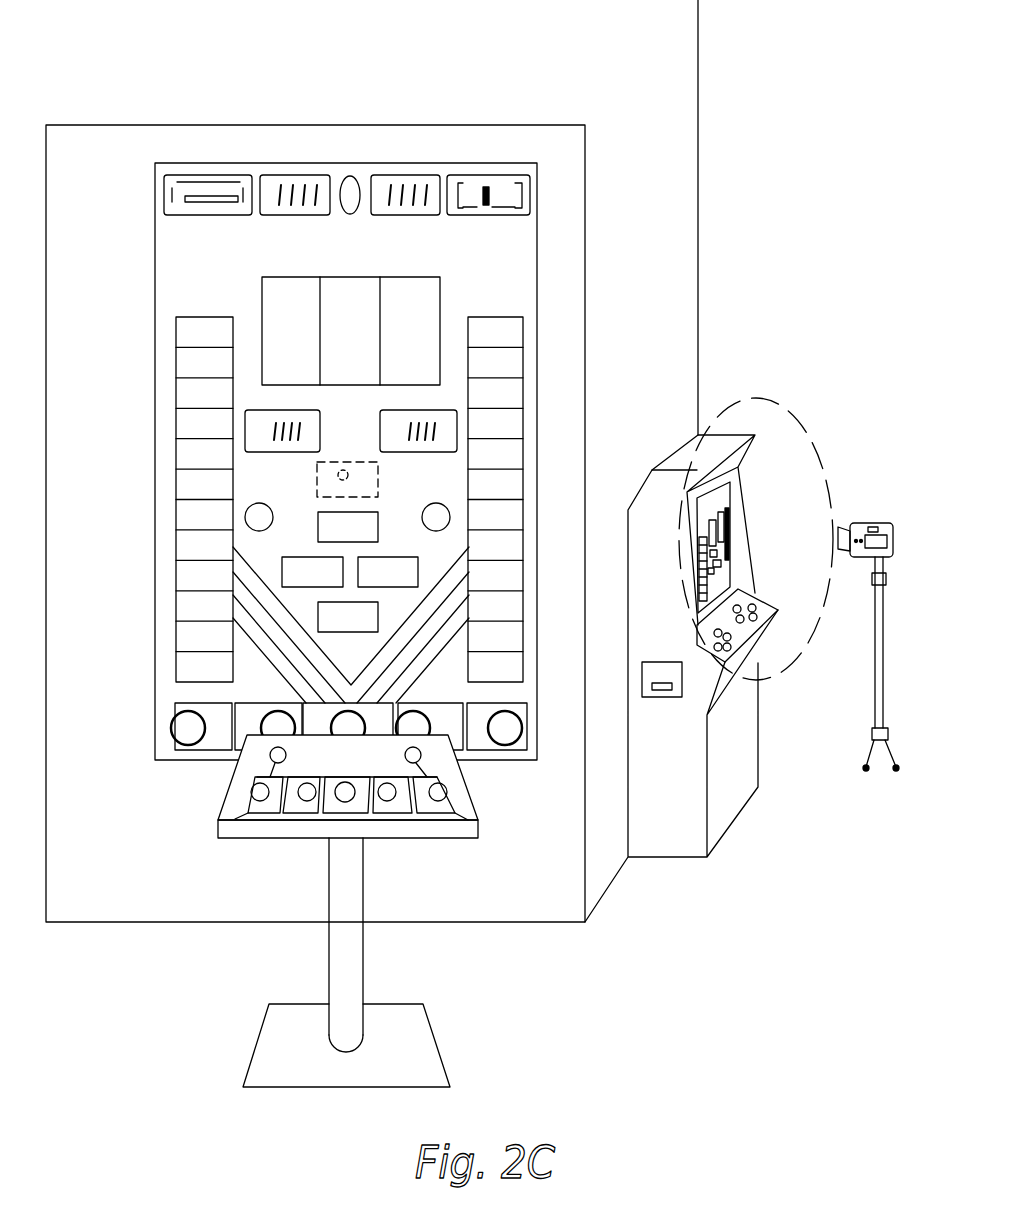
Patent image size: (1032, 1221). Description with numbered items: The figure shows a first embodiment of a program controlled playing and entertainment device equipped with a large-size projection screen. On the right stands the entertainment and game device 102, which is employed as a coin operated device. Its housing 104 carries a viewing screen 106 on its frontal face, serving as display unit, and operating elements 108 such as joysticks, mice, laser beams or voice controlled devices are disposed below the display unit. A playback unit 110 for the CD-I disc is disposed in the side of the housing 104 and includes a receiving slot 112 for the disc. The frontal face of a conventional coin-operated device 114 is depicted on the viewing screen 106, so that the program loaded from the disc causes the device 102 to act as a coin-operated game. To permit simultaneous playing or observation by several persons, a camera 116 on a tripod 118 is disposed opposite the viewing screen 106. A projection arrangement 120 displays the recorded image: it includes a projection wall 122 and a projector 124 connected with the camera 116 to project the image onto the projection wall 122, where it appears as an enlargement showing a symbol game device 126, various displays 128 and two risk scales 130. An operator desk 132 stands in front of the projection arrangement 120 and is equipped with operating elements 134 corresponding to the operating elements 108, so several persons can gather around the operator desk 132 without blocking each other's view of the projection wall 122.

The entertainment and game device 102 is at (770, 361).
The housing 104 is at (743, 455).
The viewing screen 106 is at (727, 545).
The operating elements 108 is at (757, 610).
The playback unit 110 is at (695, 742).
The receiving slot 112 is at (658, 693).
The frontal face of conventional coin-operated device 114 is at (728, 518).
The camera 116 is at (880, 523).
The tripod 118 is at (875, 697).
The projection arrangement 120 is at (738, 58).
The projection wall 122 is at (123, 263).
The projector 124 is at (378, 478).
The symbol game device 126 is at (440, 283).
The displays 128 is at (302, 555).
The risk scales 130 is at (212, 317).
The operator desk 132 is at (315, 911).
The operating elements 134 is at (248, 793).